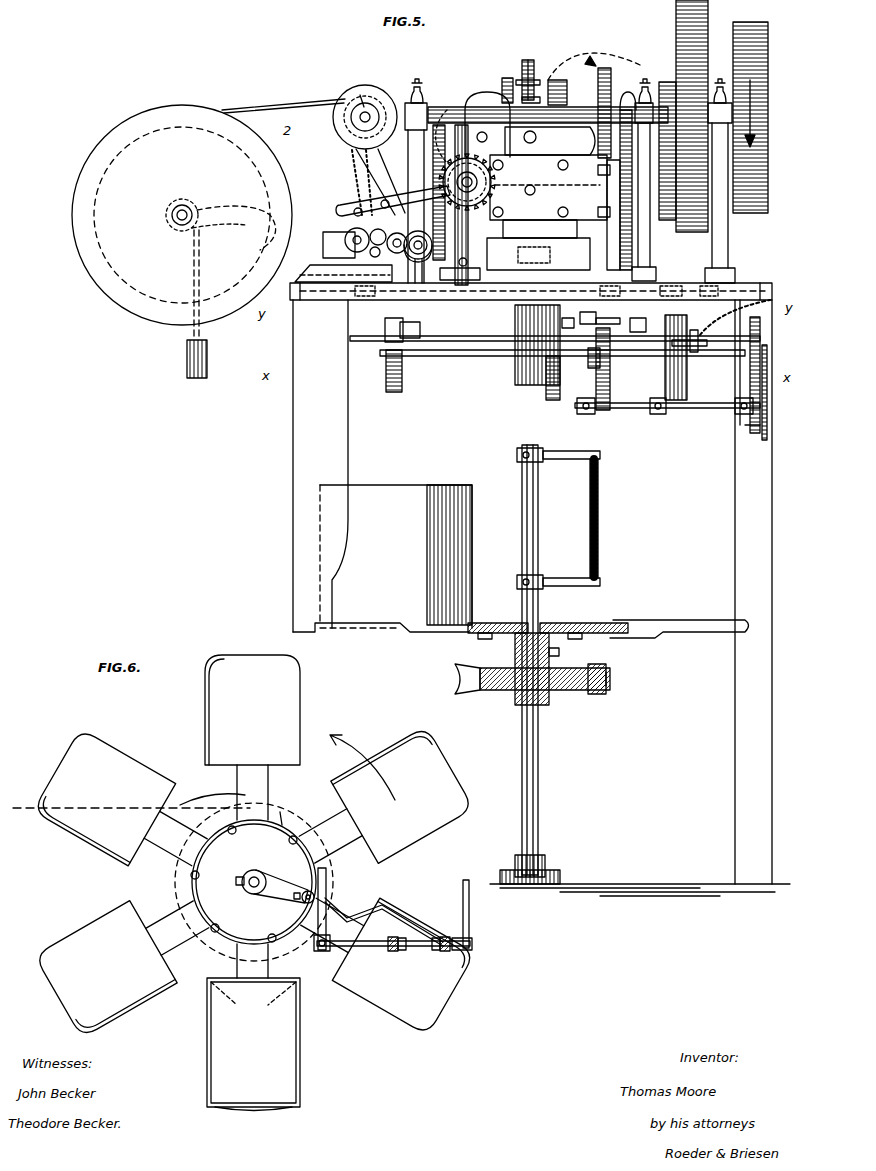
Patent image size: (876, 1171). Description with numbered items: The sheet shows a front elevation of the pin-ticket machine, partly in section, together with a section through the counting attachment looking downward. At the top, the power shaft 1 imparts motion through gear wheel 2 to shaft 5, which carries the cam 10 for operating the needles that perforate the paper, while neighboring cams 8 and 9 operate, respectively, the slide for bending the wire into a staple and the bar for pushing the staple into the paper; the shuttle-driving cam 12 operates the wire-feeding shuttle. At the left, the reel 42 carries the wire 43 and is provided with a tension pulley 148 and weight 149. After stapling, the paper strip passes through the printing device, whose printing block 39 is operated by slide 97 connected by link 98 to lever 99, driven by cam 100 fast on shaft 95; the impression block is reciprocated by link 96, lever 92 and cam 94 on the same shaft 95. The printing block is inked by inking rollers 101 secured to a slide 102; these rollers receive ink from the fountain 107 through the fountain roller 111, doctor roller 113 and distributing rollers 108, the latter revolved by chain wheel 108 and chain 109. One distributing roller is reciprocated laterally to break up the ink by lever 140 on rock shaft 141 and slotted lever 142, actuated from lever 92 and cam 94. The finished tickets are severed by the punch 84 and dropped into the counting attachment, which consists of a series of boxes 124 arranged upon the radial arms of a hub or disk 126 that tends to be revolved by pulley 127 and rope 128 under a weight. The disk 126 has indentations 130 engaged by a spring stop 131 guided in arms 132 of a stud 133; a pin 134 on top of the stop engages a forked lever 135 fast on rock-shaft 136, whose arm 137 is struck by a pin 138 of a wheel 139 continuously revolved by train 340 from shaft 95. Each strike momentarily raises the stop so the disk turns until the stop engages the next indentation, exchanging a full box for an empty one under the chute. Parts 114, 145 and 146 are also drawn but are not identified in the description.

In FIG. 5, the power shaft 1 is at (768, 121).
In FIG. 5, the gear wheel 2 is at (759, 117).
In FIG. 5, the shaft 5 is at (480, 100).
In FIG. 5, the cam 8 is at (572, 91).
In FIG. 5, the cam 9 is at (604, 70).
In FIG. 5, the cam 10 is at (526, 92).
In FIG. 5, the shuttle-driving cam 12 is at (355, 86).
In FIG. 5, the printing block 39 is at (538, 254).
In FIG. 5, the reel 42 is at (176, 108).
In FIG. 5, the wire 43 is at (260, 110).
In FIG. 5, the punch 84 is at (578, 240).
In FIG. 5, the lever 92 is at (633, 324).
In FIG. 5, the cam 94 is at (609, 369).
In FIG. 5, the shaft 95 is at (460, 356).
In FIG. 5, the link 96 is at (603, 322).
In FIG. 5, the slide 97 is at (514, 376).
In FIG. 5, the link 98 is at (562, 324).
In FIG. 5, the lever 99 is at (581, 361).
In FIG. 5, the cam 100 is at (552, 384).
In FIG. 5, the inking rollers 101 is at (464, 262).
In FIG. 5, the slide 102 is at (438, 286).
In FIG. 5, the fountain 107 is at (335, 240).
In FIG. 5, the distributing rollers 108 is at (431, 240).
In FIG. 5, the chain 109 is at (357, 176).
In FIG. 5, the fountain roller 111 is at (352, 220).
In FIG. 5, the doctor roller 113 is at (351, 255).
In FIG. 5, the bracket 114 is at (490, 100).
In FIG. 5, the boxes 124 is at (396, 556).
In FIG. 6, the boxes 124 is at (167, 991).
In FIG. 5, the hub or disk 126 is at (644, 620).
In FIG. 6, the hub or disk 126 is at (308, 1022).
In FIG. 5, the pulley 127 is at (585, 674).
In FIG. 6, the pulley 127 is at (293, 809).
In FIG. 5, the rope 128 is at (601, 686).
In FIG. 6, the rope 128 is at (212, 801).
In FIG. 5, the indentations 130 is at (470, 623).
In FIG. 6, the indentations 130 is at (290, 840).
In FIG. 5, the spring stop 131 is at (598, 533).
In FIG. 6, the spring stop 131 is at (303, 904).
In FIG. 5, the arms 132 is at (556, 455).
In FIG. 6, the arms 132 is at (281, 886).
In FIG. 5, the stud 133 is at (538, 752).
In FIG. 6, the stud 133 is at (252, 877).
In FIG. 6, the pin 134 is at (326, 900).
In FIG. 5, the forked lever 135 is at (604, 414).
In FIG. 6, the forked lever 135 is at (330, 912).
In FIG. 5, the rock-shaft 136 is at (628, 408).
In FIG. 6, the rock-shaft 136 is at (362, 942).
In FIG. 5, the arm 137 is at (744, 414).
In FIG. 6, the arm 137 is at (467, 924).
In FIG. 5, the pin 138 is at (748, 430).
In FIG. 5, the wheel 139 is at (762, 425).
In FIG. 5, the lever 140 is at (428, 322).
In FIG. 5, the rock shaft 141 is at (555, 328).
In FIG. 5, the slotted lever 142 is at (586, 306).
In FIG. 5, the drum 145 is at (689, 357).
In FIG. 5, the chain 146 is at (730, 326).
In FIG. 5, the tension pulley 148 is at (170, 217).
In FIG. 5, the weight 149 is at (206, 356).
In FIG. 5, the train 340 is at (762, 360).